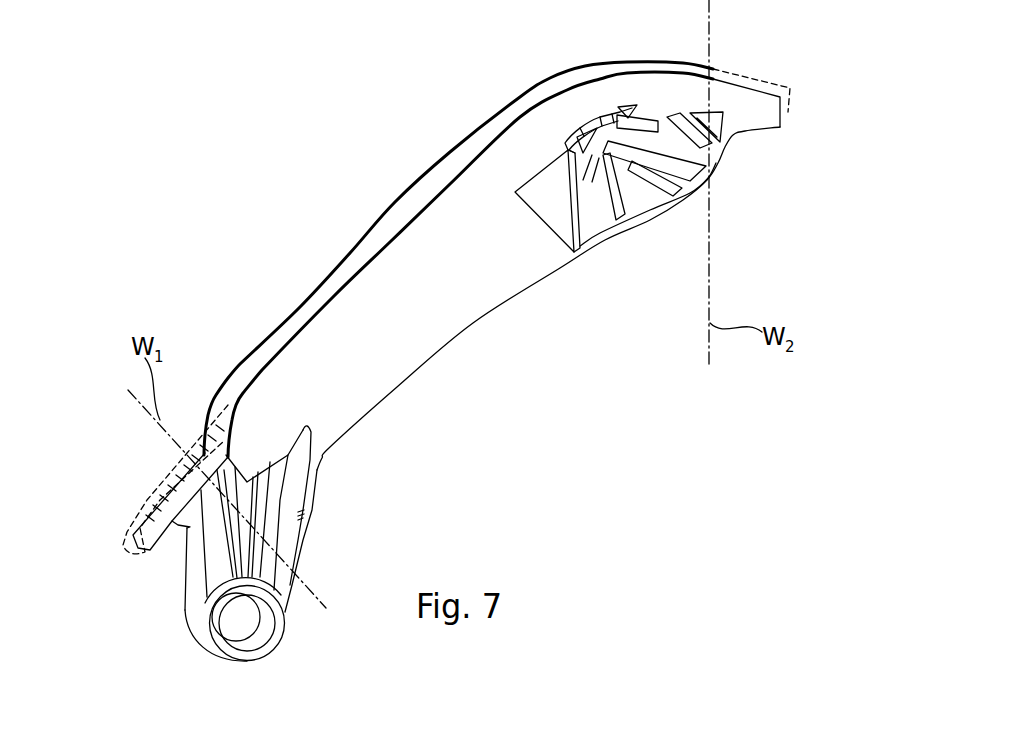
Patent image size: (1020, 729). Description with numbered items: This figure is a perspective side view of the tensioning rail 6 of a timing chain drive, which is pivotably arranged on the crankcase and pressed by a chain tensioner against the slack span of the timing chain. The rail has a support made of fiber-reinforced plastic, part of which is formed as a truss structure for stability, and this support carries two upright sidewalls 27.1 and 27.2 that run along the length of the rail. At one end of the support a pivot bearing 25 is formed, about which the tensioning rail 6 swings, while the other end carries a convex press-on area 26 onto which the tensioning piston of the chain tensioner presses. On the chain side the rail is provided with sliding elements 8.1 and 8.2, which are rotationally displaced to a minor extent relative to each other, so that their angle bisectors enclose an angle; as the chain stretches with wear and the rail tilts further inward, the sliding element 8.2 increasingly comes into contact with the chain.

The tensioning rail 6 is at (496, 401).
The sliding element 8.1 is at (132, 540).
The sliding element 8.2 is at (790, 90).
The pivot bearing 25 is at (230, 613).
The press-on area 26 is at (690, 203).
The sidewall 27.1 is at (333, 322).
The sidewall 27.2 is at (400, 193).